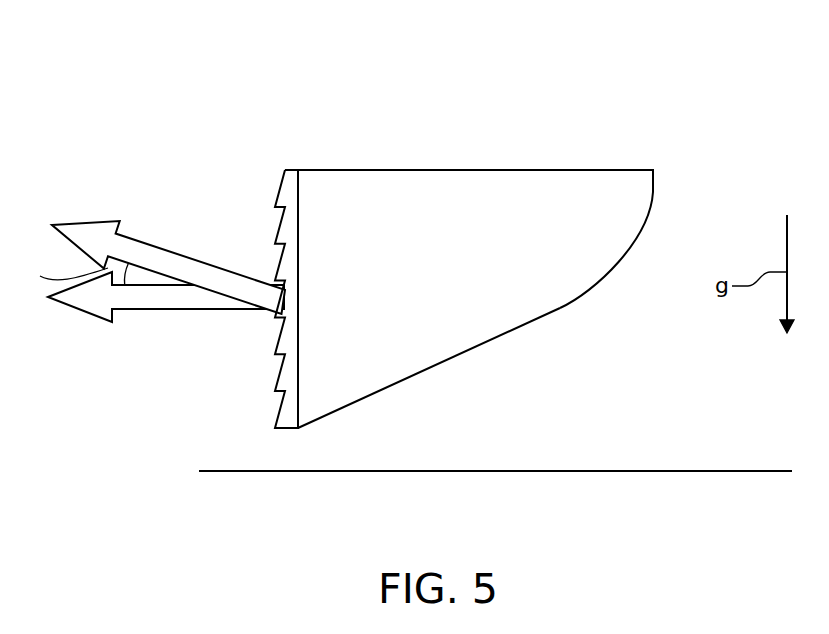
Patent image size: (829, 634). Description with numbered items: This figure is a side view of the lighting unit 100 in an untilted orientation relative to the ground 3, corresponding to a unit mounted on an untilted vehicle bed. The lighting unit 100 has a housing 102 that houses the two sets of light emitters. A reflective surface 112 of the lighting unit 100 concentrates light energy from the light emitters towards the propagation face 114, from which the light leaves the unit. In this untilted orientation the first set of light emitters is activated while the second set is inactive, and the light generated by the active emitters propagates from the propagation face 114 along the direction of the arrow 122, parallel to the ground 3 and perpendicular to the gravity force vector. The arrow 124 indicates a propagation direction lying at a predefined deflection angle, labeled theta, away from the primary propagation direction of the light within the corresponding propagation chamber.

The lighting unit 100 is at (666, 63).
The housing 102 is at (393, 196).
The reflective surface 112 is at (583, 290).
The propagation face 114 is at (235, 396).
The arrow 122 is at (162, 297).
The arrow 124 is at (185, 260).
The ground 3 is at (652, 470).